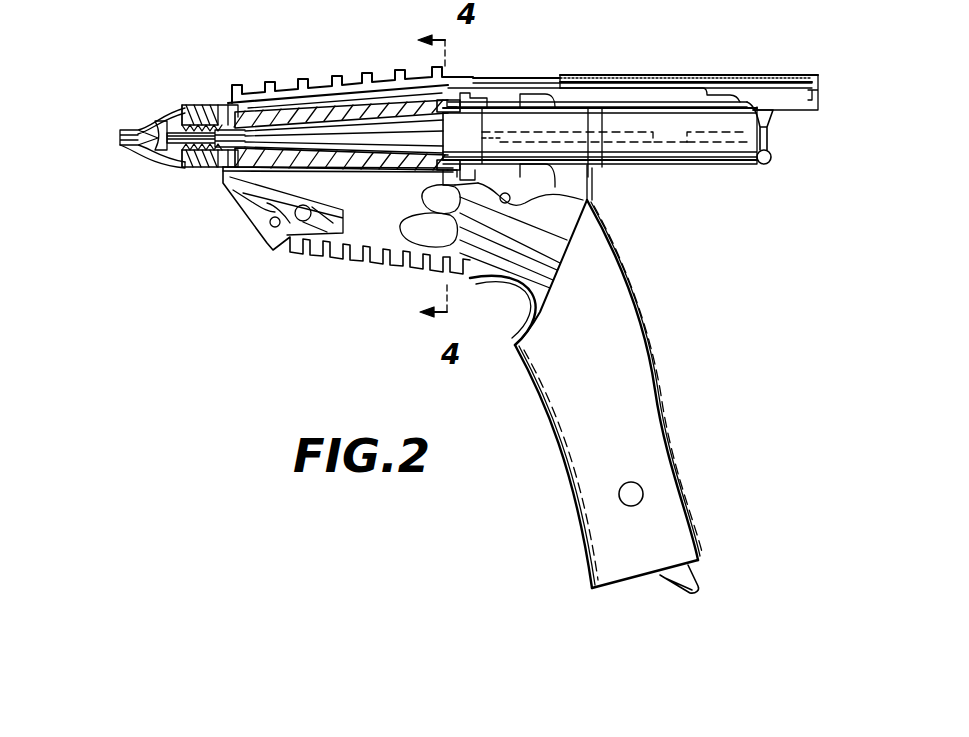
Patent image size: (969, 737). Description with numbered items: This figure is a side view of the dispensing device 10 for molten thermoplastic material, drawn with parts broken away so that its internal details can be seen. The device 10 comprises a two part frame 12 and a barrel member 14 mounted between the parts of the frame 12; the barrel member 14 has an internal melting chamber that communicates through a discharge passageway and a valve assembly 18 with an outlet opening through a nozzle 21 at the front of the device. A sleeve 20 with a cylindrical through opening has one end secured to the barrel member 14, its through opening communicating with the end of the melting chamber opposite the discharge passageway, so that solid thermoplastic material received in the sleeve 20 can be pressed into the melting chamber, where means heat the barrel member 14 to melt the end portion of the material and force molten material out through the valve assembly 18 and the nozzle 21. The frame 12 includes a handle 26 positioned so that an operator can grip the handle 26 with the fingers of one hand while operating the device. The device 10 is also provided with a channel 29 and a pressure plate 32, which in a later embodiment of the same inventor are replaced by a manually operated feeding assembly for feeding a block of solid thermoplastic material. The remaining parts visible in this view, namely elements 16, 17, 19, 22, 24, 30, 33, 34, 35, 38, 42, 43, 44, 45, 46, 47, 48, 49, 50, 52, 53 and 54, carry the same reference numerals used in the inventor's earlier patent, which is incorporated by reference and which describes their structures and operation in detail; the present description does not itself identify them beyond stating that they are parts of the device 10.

The dispensing device 10 is at (555, 65).
The frame 12 is at (630, 400).
The barrel member 14 is at (283, 95).
The plunger rod 16 is at (350, 112).
The nut 17 is at (185, 165).
The valve assembly 18 is at (181, 162).
The nozzle shell 19 is at (133, 150).
The sleeve 20 is at (567, 105).
The nozzle 21 is at (125, 129).
The cylinder 22 is at (507, 113).
The body frame 24 is at (602, 166).
The handle 26 is at (573, 463).
The channel 29 is at (703, 82).
The piston 30 is at (688, 153).
The pressure plate 32 is at (766, 138).
The top rail 33 is at (771, 90).
The housing 34 is at (657, 92).
The ball 35 is at (771, 163).
The collar 38 is at (441, 100).
The conical section 42 is at (317, 166).
The trigger 43 is at (453, 205).
The pawl 44 is at (420, 200).
The flange 45 is at (474, 98).
The ratchet plate 46 is at (427, 232).
The foot 47 is at (697, 570).
The bracket 48 is at (524, 106).
The sleeve 49 is at (192, 125).
The nozzle cap 50 is at (157, 122).
The thread 52 is at (213, 104).
The thread 53 is at (195, 104).
The washer 54 is at (222, 122).